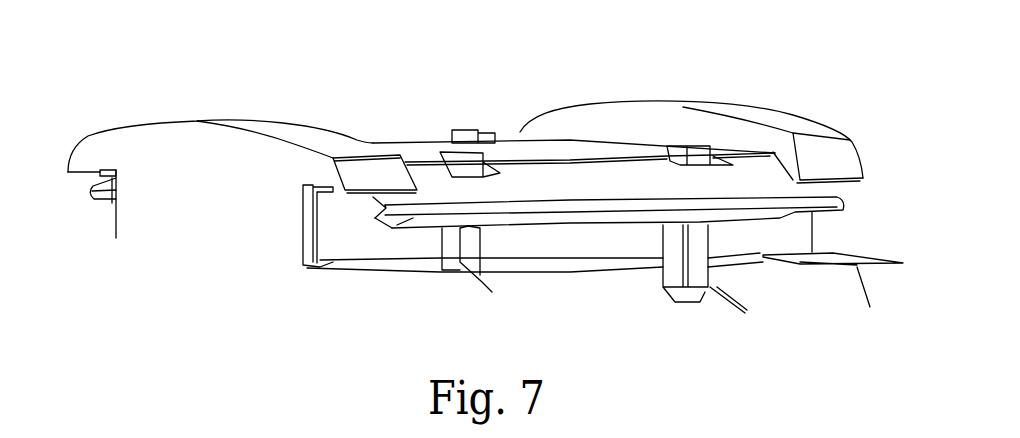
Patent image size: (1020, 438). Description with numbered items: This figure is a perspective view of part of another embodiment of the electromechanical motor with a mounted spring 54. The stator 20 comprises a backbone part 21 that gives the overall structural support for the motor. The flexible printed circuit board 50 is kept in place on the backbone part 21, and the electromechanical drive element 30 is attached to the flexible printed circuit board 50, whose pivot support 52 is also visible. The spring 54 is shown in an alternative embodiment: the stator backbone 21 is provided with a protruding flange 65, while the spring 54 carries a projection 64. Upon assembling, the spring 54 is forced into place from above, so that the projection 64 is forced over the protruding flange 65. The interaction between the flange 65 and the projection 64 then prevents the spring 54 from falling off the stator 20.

The stator 20 is at (157, 160).
The backbone part 21 is at (303, 135).
The electromechanical drive element 30 is at (577, 247).
The flexible printed circuit board 50 is at (325, 223).
The pivot support 52 is at (463, 130).
The spring 54 is at (427, 148).
The projection 64 is at (115, 203).
The protruding flange 65 is at (83, 147).